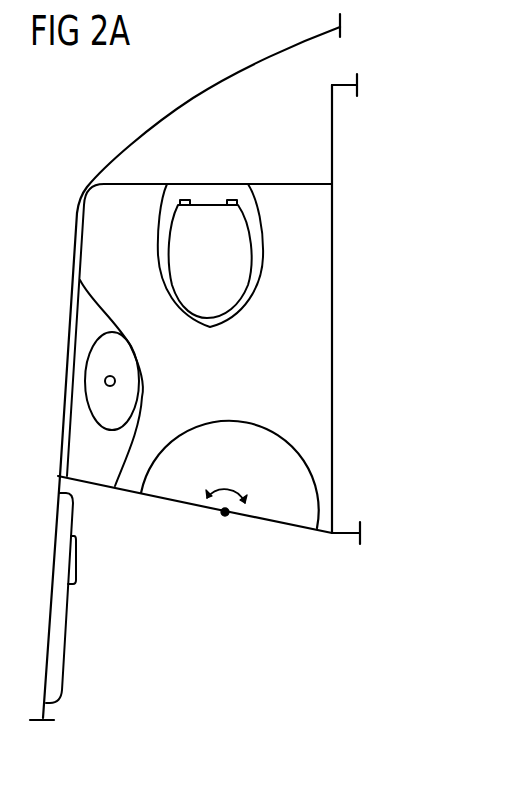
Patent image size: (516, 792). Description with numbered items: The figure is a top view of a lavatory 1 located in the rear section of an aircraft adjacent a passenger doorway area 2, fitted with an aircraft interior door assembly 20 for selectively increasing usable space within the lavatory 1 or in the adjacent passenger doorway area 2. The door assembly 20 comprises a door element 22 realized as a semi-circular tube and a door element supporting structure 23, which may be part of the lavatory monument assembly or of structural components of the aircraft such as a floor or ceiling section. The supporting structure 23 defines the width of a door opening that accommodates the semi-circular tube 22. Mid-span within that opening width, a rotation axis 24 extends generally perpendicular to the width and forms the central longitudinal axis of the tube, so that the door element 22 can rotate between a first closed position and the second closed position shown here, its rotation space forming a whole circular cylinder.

The lavatory 1 is at (228, 381).
The passenger doorway area 2 is at (170, 653).
The aircraft interior door assembly 20 is at (289, 552).
The door element 22 is at (268, 425).
The door element supporting structure 23 is at (176, 505).
The rotation axis 24 is at (225, 516).